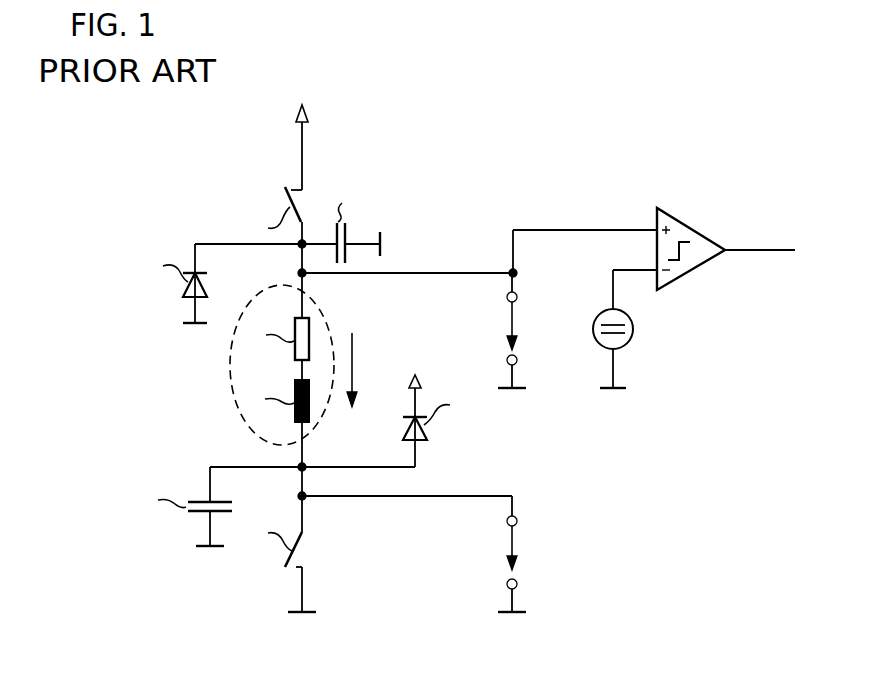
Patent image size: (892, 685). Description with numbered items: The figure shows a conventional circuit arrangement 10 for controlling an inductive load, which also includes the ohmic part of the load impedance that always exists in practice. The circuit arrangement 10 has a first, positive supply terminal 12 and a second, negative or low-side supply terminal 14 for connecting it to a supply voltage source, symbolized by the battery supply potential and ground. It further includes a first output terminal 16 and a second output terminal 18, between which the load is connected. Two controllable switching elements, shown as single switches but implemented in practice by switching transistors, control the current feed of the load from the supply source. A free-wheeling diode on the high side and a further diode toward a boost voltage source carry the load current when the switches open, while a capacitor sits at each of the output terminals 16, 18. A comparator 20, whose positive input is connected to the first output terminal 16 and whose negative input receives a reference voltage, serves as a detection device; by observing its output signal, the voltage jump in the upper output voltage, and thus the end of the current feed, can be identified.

The circuit arrangement 10 is at (430, 142).
The first supply terminal 12 is at (302, 152).
The second supply terminal 14 is at (304, 590).
The first output terminal 16 is at (298, 273).
The second output terminal 18 is at (305, 465).
The comparator 20 is at (690, 223).